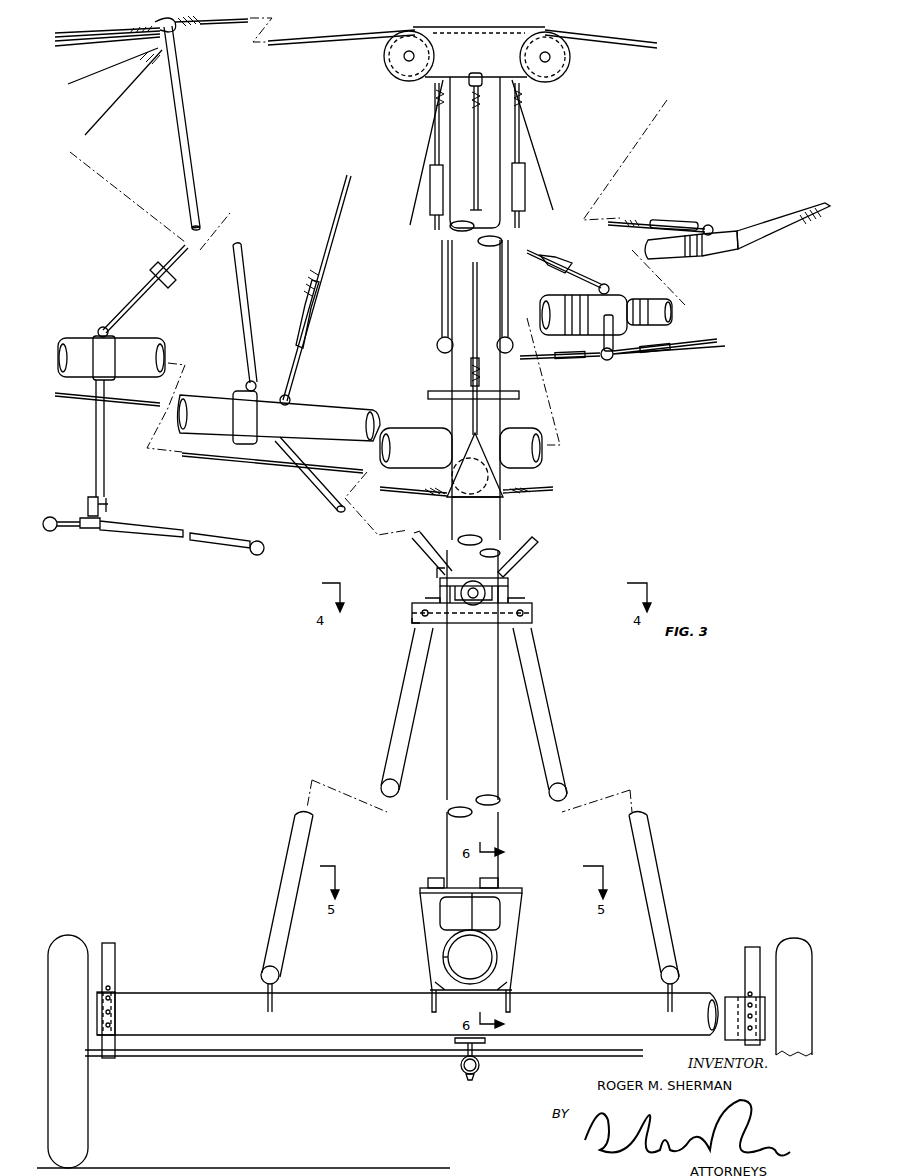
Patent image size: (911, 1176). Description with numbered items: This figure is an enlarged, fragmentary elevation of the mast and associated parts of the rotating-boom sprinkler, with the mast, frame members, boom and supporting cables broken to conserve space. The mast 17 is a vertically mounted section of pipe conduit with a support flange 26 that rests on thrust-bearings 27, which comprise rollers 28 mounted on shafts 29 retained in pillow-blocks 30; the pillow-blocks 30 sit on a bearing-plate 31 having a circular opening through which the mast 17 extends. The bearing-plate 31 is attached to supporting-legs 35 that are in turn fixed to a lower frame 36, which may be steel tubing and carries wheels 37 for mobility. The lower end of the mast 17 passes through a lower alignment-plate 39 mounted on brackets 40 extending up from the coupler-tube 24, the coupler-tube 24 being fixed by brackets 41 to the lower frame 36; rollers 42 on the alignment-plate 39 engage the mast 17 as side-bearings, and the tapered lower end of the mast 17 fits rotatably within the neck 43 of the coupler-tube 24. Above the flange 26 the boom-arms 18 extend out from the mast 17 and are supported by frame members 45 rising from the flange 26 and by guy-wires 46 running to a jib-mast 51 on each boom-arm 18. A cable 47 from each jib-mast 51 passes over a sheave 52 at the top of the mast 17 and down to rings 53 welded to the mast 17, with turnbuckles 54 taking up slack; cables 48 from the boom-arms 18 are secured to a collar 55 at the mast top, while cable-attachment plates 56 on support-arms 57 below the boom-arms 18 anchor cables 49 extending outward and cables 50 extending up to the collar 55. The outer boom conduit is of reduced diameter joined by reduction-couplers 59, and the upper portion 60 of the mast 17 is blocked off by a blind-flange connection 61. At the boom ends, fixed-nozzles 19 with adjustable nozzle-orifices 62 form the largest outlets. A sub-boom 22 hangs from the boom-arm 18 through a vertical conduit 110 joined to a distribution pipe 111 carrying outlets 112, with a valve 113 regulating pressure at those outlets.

The mast 17 is at (480, 670).
The boom-arms 18 is at (225, 395).
The fixed-distribution nozzles 19 is at (780, 225).
The sub-booms 22 is at (104, 485).
The coupler-tube 24 is at (500, 945).
The support flange 26 is at (437, 570).
The thrust-bearings 27 is at (425, 590).
The rollers 28 is at (470, 612).
The shafts 29 is at (481, 583).
The pillow-blocks 30 is at (425, 598).
The bearing-plate 31 is at (412, 620).
The supporting-legs 35 is at (294, 832).
The lower frame 36 is at (585, 1000).
The wheels 37 is at (85, 915).
The lower alignment-plate 39 is at (522, 890).
The brackets 40 is at (433, 930).
The brackets 41 is at (438, 978).
The rollers 42 is at (432, 878).
The neck 43 is at (440, 945).
The frame members 45 is at (322, 500).
The guy-wires 46 is at (110, 88).
The cables 47 is at (322, 44).
The cables 48 is at (325, 232).
The cables 49 is at (395, 495).
The cables 50 is at (474, 175).
The jib-mast 51 is at (188, 122).
The sheave 52 is at (392, 68).
The rings 53 is at (473, 335).
The turnbuckles 54 is at (433, 220).
The collar 55 is at (482, 76).
The cable-attachment plates 56 is at (490, 508).
The support-arms 57 is at (460, 460).
The reduction-couplers 59 is at (626, 298).
The upper portion of the mast 60 is at (498, 196).
The blind-flange connection 61 is at (433, 392).
The adjustable nozzle-orifices 62 is at (812, 205).
The vertical conduit 110 is at (96, 445).
The distribution pipe 111 is at (140, 528).
The distribution outlets 112 is at (52, 532).
The valve 113 is at (110, 504).